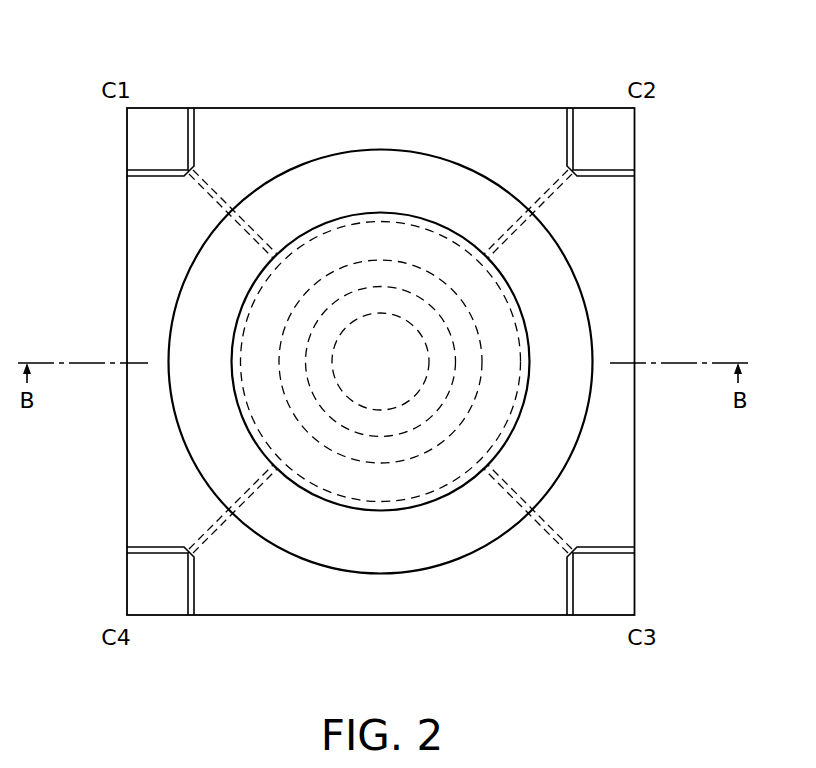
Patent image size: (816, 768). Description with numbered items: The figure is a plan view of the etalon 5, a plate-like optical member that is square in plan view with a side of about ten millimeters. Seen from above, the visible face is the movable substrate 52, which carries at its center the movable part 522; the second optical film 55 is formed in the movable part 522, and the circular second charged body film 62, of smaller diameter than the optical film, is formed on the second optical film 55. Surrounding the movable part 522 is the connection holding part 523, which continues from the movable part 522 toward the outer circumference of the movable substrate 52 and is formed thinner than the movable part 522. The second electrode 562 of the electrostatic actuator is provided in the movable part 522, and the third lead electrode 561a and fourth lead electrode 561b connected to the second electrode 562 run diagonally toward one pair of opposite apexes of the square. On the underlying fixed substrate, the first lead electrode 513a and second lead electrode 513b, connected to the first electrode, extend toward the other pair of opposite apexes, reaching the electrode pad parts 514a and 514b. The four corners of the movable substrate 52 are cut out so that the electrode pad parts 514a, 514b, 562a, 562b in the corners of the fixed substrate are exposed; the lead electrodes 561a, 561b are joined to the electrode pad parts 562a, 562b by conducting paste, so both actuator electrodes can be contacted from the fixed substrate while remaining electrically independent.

The etalon 5 is at (606, 64).
The movable substrate 52 is at (623, 247).
The second optical film 55 is at (397, 302).
The second charged body film 62 is at (405, 345).
The first lead electrode 513a is at (538, 195).
The second lead electrode 513b is at (224, 532).
The electrode pad part 514a is at (631, 138).
The electrode pad part 514b is at (130, 586).
The movable part 522 is at (355, 213).
The connection holding part 523 is at (297, 195).
The third lead electrode 561a is at (222, 195).
The fourth lead electrode 561b is at (542, 530).
The second electrode 562 is at (383, 482).
The electrode pad part 562a is at (130, 138).
The electrode pad part 562b is at (631, 586).